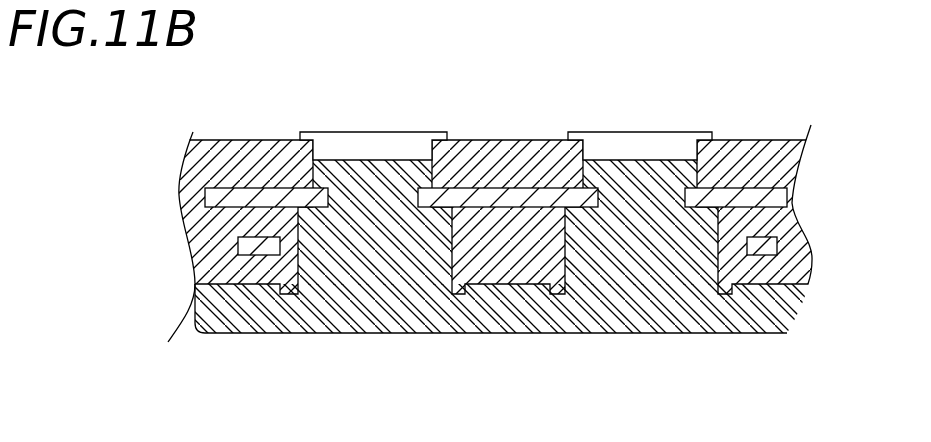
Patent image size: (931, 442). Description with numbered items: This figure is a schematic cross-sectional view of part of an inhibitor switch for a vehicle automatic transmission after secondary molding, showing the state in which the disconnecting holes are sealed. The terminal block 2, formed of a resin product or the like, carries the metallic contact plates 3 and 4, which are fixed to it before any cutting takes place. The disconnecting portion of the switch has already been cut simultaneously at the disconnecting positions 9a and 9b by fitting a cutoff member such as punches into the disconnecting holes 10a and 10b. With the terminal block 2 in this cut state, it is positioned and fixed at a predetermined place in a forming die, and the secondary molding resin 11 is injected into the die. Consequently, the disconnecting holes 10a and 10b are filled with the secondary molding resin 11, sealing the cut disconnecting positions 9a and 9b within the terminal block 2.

The terminal block 2 is at (181, 173).
The contact plate 3 is at (797, 198).
The contact plate 4 is at (782, 238).
The disconnecting position 9a is at (367, 188).
The disconnecting position 9b is at (637, 188).
The disconnecting hole 10a is at (338, 130).
The disconnecting hole 10b is at (608, 130).
The secondary molding resin 11 is at (313, 330).